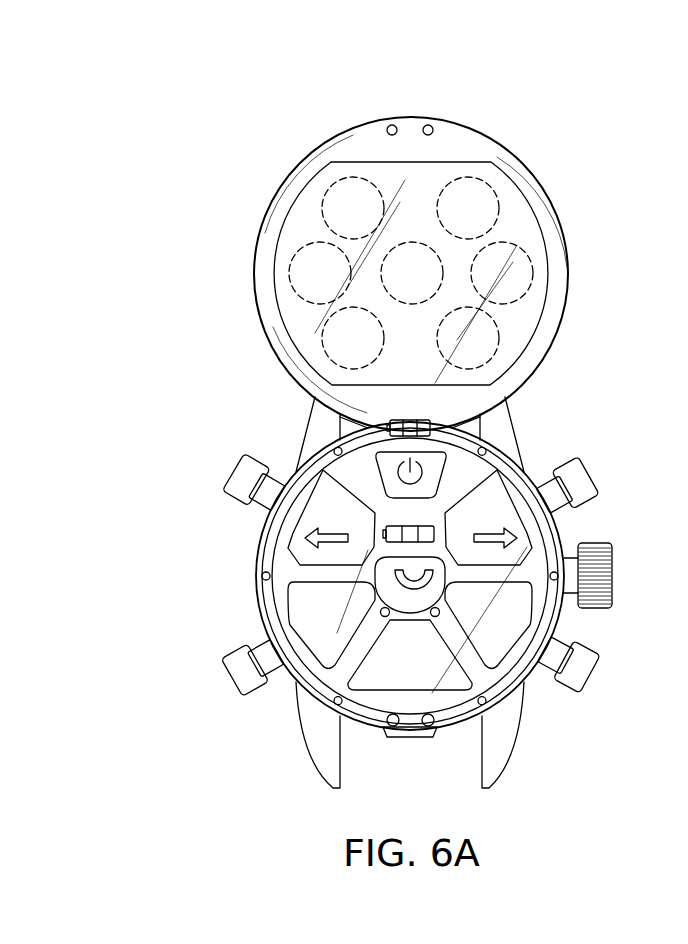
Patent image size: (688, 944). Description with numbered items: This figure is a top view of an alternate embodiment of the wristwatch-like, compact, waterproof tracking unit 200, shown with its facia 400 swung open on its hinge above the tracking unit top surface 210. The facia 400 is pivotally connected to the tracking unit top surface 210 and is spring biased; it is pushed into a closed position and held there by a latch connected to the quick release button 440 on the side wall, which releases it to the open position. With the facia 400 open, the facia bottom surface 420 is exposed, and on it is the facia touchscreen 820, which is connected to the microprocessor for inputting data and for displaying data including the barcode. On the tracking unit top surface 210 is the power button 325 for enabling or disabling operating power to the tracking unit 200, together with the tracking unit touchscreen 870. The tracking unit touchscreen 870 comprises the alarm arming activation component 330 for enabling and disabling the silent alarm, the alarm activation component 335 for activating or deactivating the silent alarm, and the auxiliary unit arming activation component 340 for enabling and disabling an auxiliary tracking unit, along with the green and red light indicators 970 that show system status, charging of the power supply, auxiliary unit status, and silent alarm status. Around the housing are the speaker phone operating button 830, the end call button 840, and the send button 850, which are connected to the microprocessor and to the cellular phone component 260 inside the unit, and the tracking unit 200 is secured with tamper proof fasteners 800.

The tracking unit 200 is at (192, 245).
The facia 400 is at (342, 111).
The facia bottom surface 420 is at (450, 140).
The facia touchscreen 820 is at (317, 213).
The tracking unit top surface 210 is at (268, 538).
The tamper proof fasteners 800 is at (262, 576).
The power button 325 is at (390, 460).
The cellular phone component 260 is at (420, 565).
The end call button 840 is at (240, 480).
The speaker phone operating button 830 is at (577, 477).
The send button 850 is at (240, 678).
The quick release button 440 is at (580, 672).
The auxiliary unit arming activation component 340 is at (300, 612).
The alarm arming activation component 330 is at (513, 597).
The alarm activation component 335 is at (422, 685).
The light indicators 970 is at (413, 537).
The tracking unit touchscreen 870 is at (407, 705).